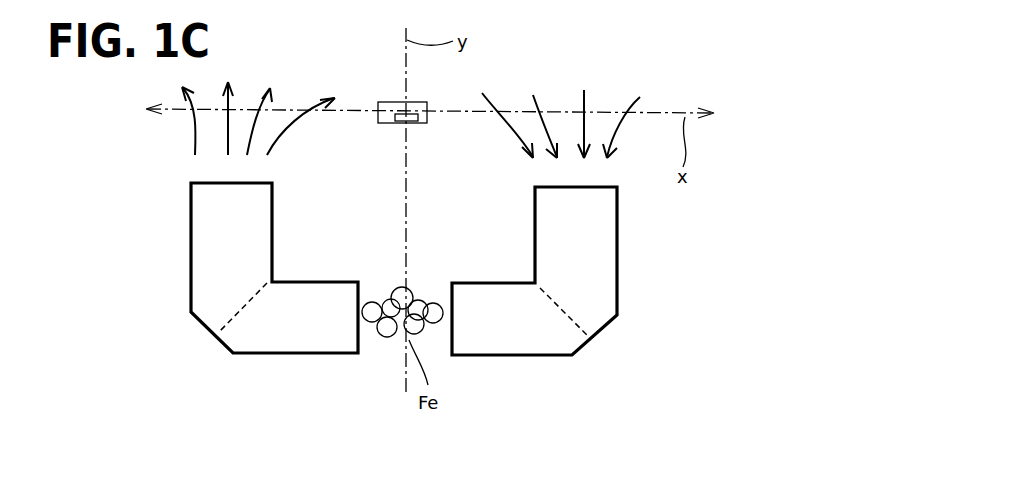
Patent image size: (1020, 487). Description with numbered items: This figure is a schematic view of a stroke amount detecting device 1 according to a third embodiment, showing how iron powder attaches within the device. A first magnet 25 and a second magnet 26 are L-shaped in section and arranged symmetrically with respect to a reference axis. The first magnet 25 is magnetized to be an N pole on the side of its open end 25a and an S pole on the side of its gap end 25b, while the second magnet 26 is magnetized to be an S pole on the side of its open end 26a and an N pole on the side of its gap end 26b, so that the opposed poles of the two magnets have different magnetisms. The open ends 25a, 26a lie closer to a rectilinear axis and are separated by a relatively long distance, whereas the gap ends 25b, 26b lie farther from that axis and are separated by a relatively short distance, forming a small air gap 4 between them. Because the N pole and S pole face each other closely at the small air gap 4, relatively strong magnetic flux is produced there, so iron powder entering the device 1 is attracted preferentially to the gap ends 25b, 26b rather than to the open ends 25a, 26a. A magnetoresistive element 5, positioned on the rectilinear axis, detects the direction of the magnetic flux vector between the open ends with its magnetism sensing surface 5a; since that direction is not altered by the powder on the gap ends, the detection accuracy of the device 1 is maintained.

The stroke amount detecting device 1 is at (702, 92).
The small air gap 4 is at (380, 283).
The magnetoresistive element 5 is at (398, 102).
The magnetism sensing surface 5a is at (398, 123).
The first magnet 25 is at (236, 286).
The open end 25a is at (208, 182).
The gap end 25b is at (358, 353).
The second magnet 26 is at (560, 289).
The open end 26a is at (598, 186).
The gap end 26b is at (452, 341).